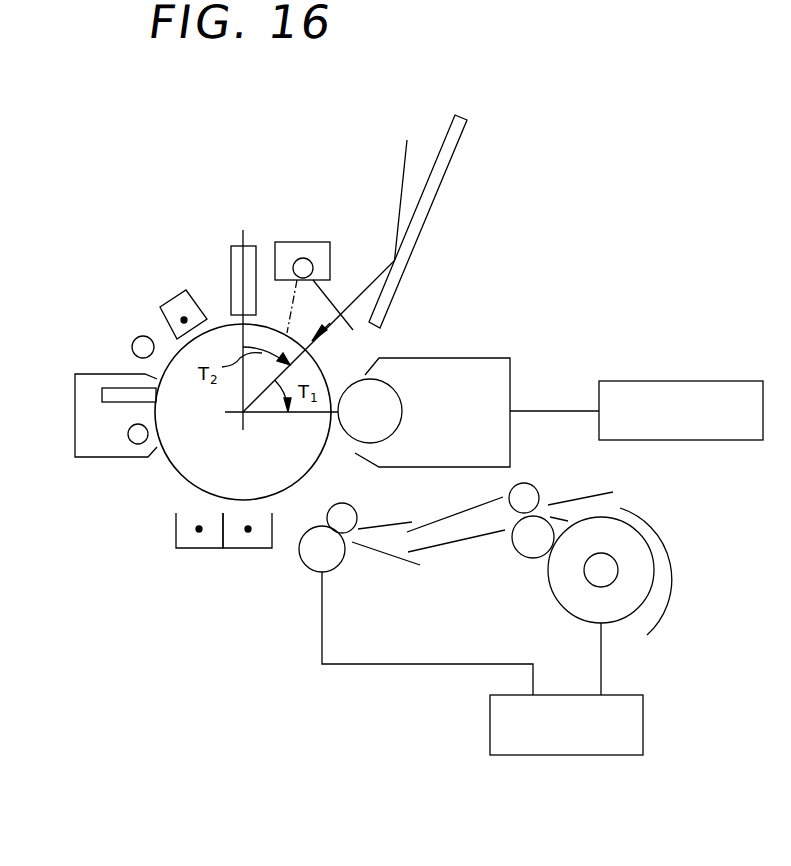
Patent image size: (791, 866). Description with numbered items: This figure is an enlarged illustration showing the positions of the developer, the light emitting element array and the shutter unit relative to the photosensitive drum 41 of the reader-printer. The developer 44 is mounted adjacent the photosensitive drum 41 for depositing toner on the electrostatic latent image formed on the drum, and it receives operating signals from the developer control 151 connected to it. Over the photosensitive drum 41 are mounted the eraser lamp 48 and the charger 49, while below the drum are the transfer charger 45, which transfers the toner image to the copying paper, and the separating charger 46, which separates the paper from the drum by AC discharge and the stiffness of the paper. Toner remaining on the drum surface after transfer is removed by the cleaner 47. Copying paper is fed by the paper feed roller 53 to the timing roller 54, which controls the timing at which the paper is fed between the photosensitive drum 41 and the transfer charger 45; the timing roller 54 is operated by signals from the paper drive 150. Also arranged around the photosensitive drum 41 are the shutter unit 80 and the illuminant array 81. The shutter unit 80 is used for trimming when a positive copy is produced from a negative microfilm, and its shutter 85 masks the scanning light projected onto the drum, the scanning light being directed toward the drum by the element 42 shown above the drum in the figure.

The photosensitive drum 41 is at (183, 473).
The mirror / scanning light beam 42 is at (443, 168).
The developer 44 is at (479, 357).
The transfer charger 45 is at (248, 549).
The separating charger 46 is at (198, 549).
The cleaner 47 is at (75, 421).
The eraser lamp 48 is at (137, 338).
The charger 49 is at (170, 297).
The paper feed roller 53 is at (648, 558).
The timing roller 54 is at (343, 504).
The shutter unit 80 is at (302, 244).
The illuminant array 81 is at (242, 230).
The shutter 85 is at (347, 322).
The paper drive 150 is at (563, 757).
The developer control 151 is at (673, 380).